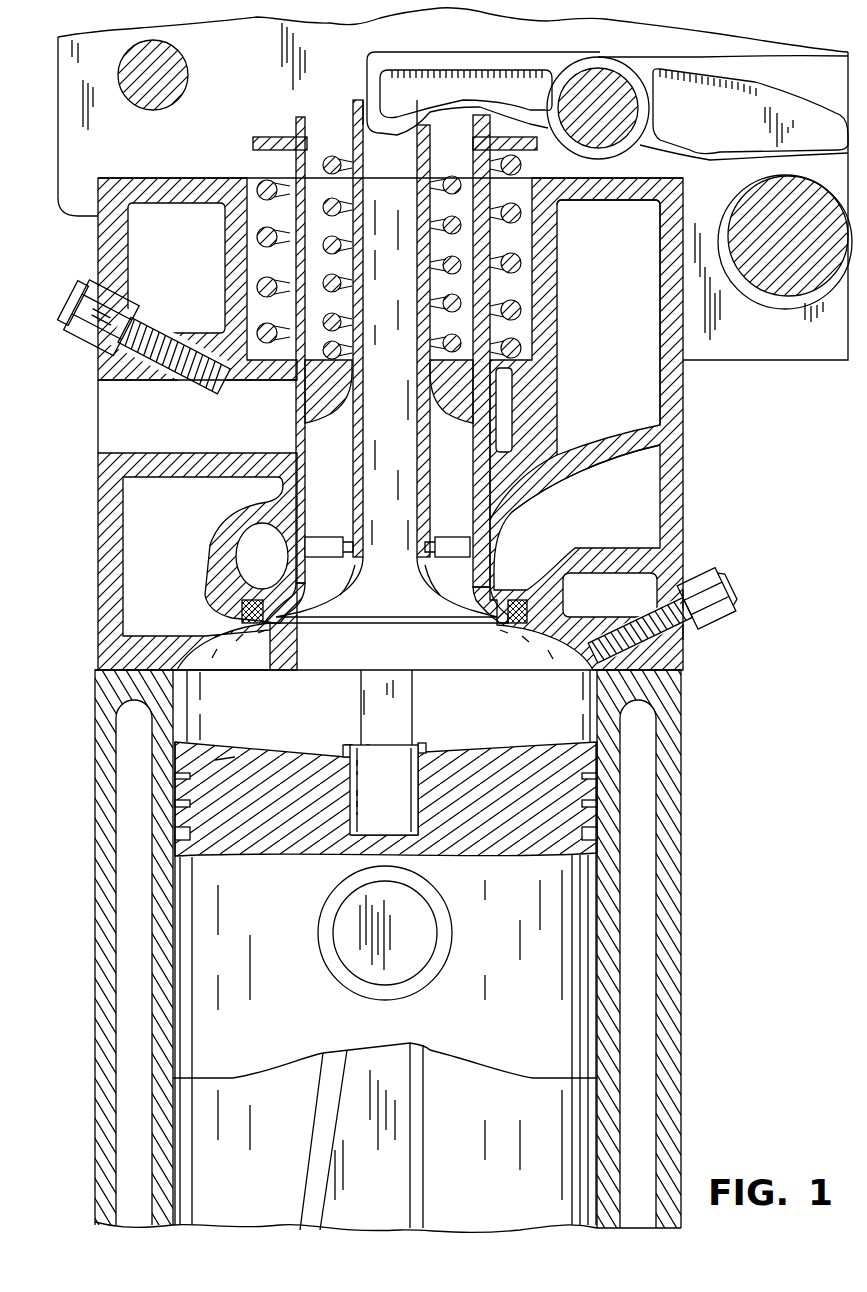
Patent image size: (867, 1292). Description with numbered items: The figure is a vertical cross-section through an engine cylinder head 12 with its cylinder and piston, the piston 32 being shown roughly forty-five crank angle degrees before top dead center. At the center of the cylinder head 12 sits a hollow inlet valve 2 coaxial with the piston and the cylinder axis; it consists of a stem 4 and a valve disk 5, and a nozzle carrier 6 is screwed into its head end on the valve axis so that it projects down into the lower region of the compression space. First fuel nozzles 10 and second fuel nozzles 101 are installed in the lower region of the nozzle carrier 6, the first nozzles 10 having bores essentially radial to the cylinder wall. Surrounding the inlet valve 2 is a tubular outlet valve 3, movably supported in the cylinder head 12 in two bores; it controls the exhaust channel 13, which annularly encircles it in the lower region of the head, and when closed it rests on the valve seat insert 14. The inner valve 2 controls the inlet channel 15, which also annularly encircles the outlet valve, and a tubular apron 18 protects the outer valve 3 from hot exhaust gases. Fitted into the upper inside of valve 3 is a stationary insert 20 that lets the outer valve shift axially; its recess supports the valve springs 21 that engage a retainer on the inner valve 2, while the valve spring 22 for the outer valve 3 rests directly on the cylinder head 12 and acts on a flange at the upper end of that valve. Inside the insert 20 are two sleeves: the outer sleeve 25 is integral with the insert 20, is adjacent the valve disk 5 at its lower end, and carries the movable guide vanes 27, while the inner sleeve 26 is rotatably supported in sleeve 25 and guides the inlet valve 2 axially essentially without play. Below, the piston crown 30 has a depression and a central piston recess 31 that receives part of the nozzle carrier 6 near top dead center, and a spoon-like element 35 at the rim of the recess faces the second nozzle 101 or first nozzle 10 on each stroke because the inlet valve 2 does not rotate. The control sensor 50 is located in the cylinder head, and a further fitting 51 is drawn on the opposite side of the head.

The inlet valve 2 is at (400, 462).
The outlet valve 3 is at (295, 412).
The stem 4 is at (393, 356).
The valve disk 5 is at (393, 609).
The nozzle carrier 6 is at (404, 684).
The first fuel nozzles 10 is at (372, 746).
The cylinder head 12 is at (695, 422).
The exhaust channel 13 is at (618, 512).
The valve seat insert 14 is at (263, 628).
The inlet channel 15 is at (163, 430).
The tubular apron 18 is at (278, 567).
The insert 20 is at (332, 383).
The valve springs 21 is at (365, 158).
The valve spring 22 is at (557, 240).
The outer sleeve 25 is at (428, 260).
The inner sleeve 26 is at (362, 286).
The guide vanes 27 is at (322, 537).
The piston crown 30 is at (476, 755).
The piston recess 31 is at (396, 811).
The piston 32 is at (228, 757).
The spoon-like element 35 is at (347, 757).
The sensor 50 is at (714, 588).
The fuel injector 51 is at (68, 334).
The second fuel nozzles 101 is at (348, 750).